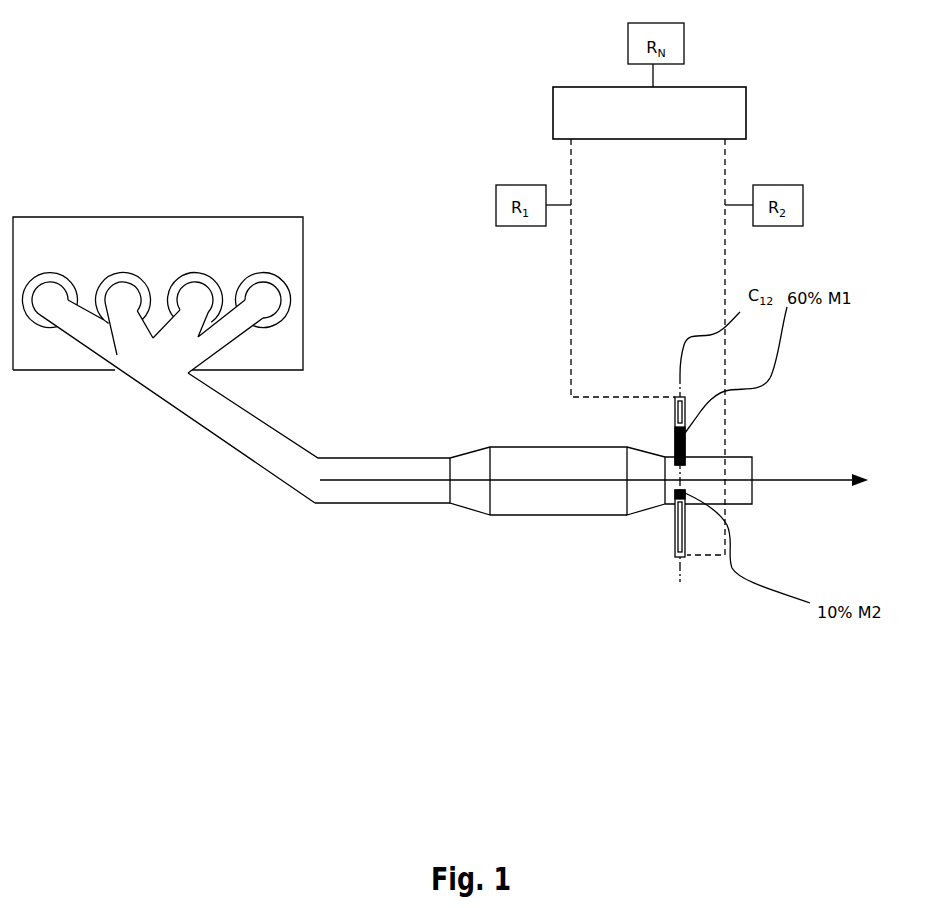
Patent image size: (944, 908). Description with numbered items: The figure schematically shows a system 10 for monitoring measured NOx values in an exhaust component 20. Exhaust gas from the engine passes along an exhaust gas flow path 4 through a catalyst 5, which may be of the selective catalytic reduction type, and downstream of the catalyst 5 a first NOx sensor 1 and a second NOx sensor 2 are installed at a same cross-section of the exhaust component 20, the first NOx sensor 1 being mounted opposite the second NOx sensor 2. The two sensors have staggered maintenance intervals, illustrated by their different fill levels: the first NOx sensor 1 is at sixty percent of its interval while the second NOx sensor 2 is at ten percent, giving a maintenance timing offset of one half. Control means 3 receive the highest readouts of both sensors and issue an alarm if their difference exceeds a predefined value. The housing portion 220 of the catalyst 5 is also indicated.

The system 10 is at (405, 228).
The control means 3 is at (710, 103).
The catalyst 5 is at (532, 463).
The catalytic converter housing 220 is at (540, 508).
The exhaust gas flow path 4 is at (763, 478).
The exhaust component 20 is at (781, 402).
The first NOx sensor 1 is at (683, 397).
The second NOx sensor 2 is at (687, 545).